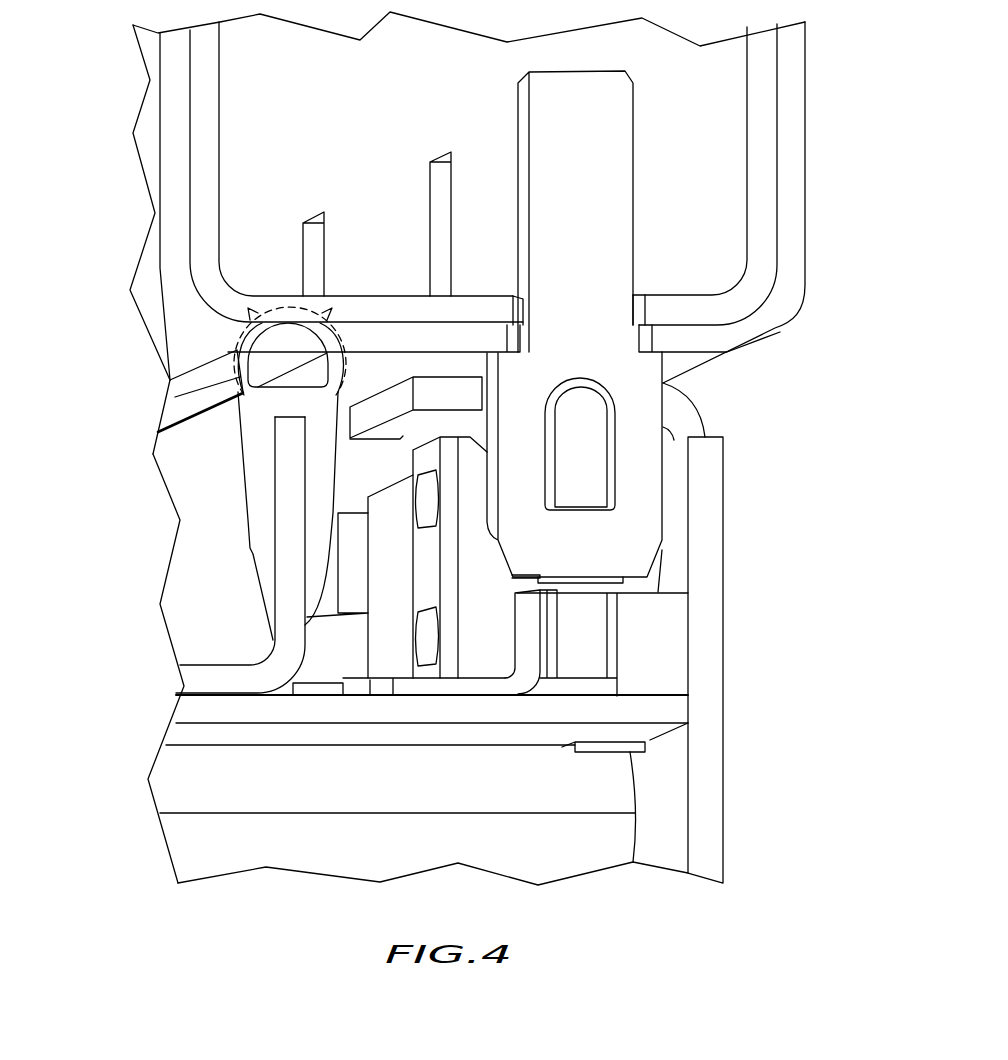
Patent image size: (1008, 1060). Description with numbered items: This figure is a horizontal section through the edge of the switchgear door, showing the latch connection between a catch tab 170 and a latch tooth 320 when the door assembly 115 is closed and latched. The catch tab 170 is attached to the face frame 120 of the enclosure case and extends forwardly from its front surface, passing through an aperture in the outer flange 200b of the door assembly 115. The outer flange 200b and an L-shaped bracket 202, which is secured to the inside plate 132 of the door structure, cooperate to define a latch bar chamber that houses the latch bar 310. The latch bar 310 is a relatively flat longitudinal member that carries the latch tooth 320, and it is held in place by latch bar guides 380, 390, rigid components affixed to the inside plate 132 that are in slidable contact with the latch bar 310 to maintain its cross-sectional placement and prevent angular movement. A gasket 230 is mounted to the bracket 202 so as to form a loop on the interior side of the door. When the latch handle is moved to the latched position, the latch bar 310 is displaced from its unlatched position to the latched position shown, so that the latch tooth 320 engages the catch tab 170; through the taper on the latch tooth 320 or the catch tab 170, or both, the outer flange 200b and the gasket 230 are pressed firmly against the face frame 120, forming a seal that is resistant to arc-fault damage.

The face frame 120 is at (725, 337).
The outer flange 200b is at (677, 407).
The catch tab 170 is at (642, 446).
The latch tooth 320 is at (583, 583).
The door assembly 115 is at (775, 698).
The gasket 230 is at (176, 398).
The latch bar 310 is at (397, 540).
The bracket 202 is at (205, 677).
The inside plate 132 is at (198, 704).
The latch bar guide 380 is at (428, 589).
The latch bar guide 390 is at (535, 658).